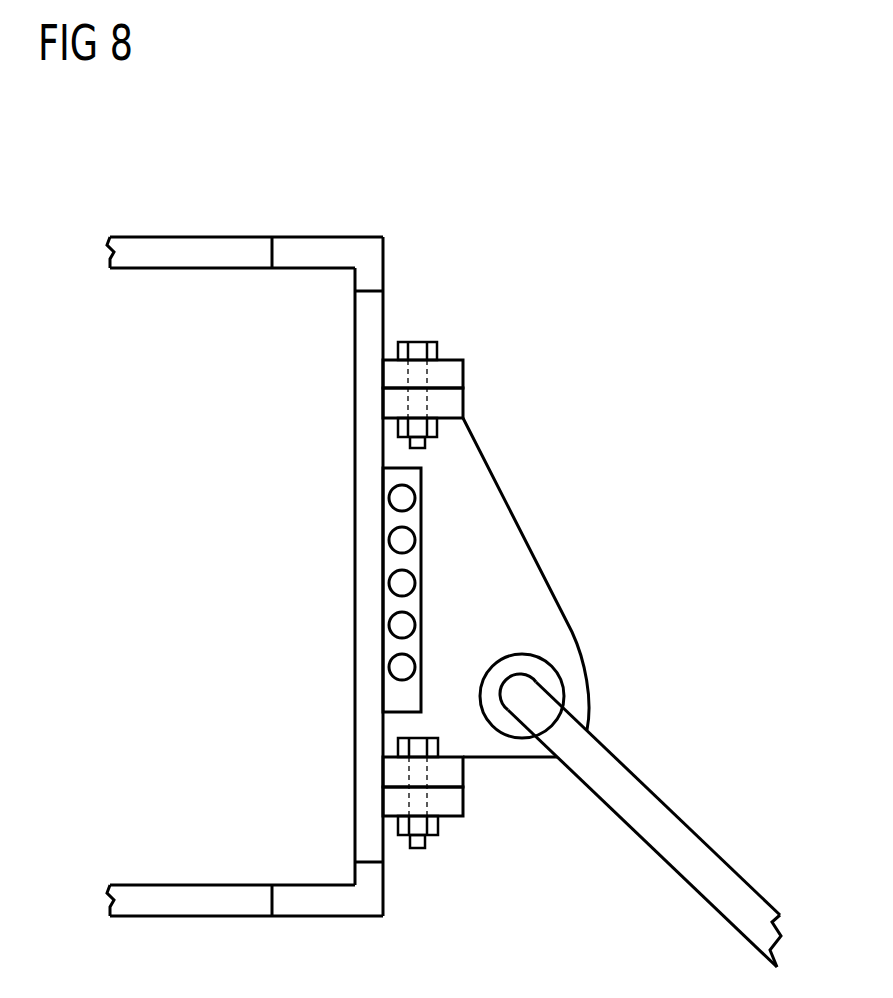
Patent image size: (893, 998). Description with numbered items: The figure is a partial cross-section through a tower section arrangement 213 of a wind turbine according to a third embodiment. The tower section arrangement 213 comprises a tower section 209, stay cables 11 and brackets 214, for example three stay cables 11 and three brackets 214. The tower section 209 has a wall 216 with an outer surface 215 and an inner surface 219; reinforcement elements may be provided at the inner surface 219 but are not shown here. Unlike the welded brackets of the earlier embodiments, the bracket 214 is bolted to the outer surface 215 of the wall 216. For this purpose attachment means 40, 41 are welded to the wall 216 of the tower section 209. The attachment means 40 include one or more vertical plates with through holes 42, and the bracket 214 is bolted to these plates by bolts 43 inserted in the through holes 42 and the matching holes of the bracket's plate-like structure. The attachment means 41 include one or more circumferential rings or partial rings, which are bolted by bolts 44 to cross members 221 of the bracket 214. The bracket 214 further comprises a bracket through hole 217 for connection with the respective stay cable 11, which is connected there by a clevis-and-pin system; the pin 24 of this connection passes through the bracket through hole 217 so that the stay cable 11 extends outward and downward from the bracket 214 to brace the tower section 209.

The tower section 209 is at (383, 258).
The outer surface 215 is at (383, 317).
The wall 216 is at (383, 300).
The inner surface 219 is at (354, 315).
The bolts 44 is at (437, 347).
The attachment means 41 is at (463, 374).
The cross members 221 is at (463, 402).
The attachment means 40 is at (393, 478).
The through holes 42 is at (386, 494).
The bolts 43 is at (386, 538).
The bracket 214 is at (528, 590).
The bracket through hole 217 is at (537, 683).
The pivot pin 24 is at (572, 708).
The stay cable 11 is at (700, 838).
The tower section arrangement 213 is at (672, 167).